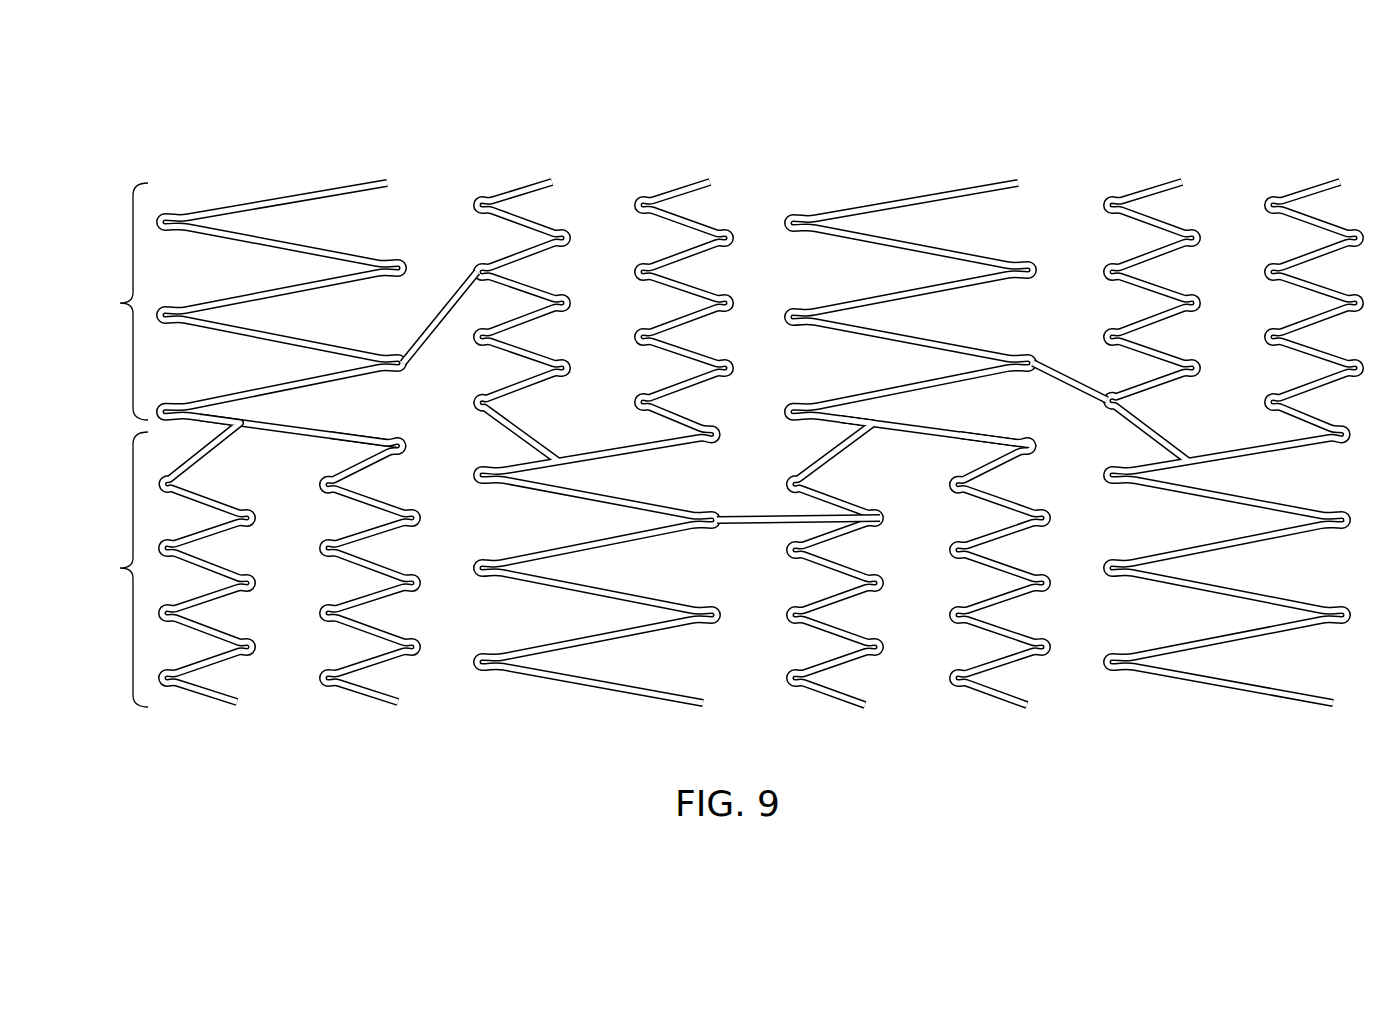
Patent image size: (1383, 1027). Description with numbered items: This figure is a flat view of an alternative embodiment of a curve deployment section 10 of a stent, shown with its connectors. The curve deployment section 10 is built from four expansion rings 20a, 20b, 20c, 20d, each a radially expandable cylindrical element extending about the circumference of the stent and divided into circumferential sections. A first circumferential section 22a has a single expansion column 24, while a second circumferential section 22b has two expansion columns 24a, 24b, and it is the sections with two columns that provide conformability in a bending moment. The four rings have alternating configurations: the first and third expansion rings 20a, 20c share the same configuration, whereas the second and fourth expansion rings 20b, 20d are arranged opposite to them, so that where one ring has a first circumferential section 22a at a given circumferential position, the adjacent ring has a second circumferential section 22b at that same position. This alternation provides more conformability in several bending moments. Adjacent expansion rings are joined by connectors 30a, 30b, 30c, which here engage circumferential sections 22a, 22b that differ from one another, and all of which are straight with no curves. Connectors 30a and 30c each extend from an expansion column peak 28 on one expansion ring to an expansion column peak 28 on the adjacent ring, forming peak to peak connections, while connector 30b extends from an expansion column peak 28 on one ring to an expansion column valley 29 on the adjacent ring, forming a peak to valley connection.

The curve deployment section 10 is at (715, 416).
The first expansion ring 20a is at (280, 416).
The second expansion ring 20b is at (715, 157).
The third expansion ring 20c is at (1030, 157).
The fourth expansion ring 20d is at (1345, 157).
The first circumferential section 22a is at (109, 301).
The second circumferential section 22b is at (109, 569).
The expansion column 24 is at (281, 265).
The first expansion column 24a is at (197, 614).
The second expansion column 24b is at (366, 623).
The expansion column peak 28 is at (475, 267).
The expansion column valley 29 is at (870, 517).
The first connector 30a is at (432, 316).
The second connector 30b is at (765, 513).
The third connector 30c is at (1070, 376).